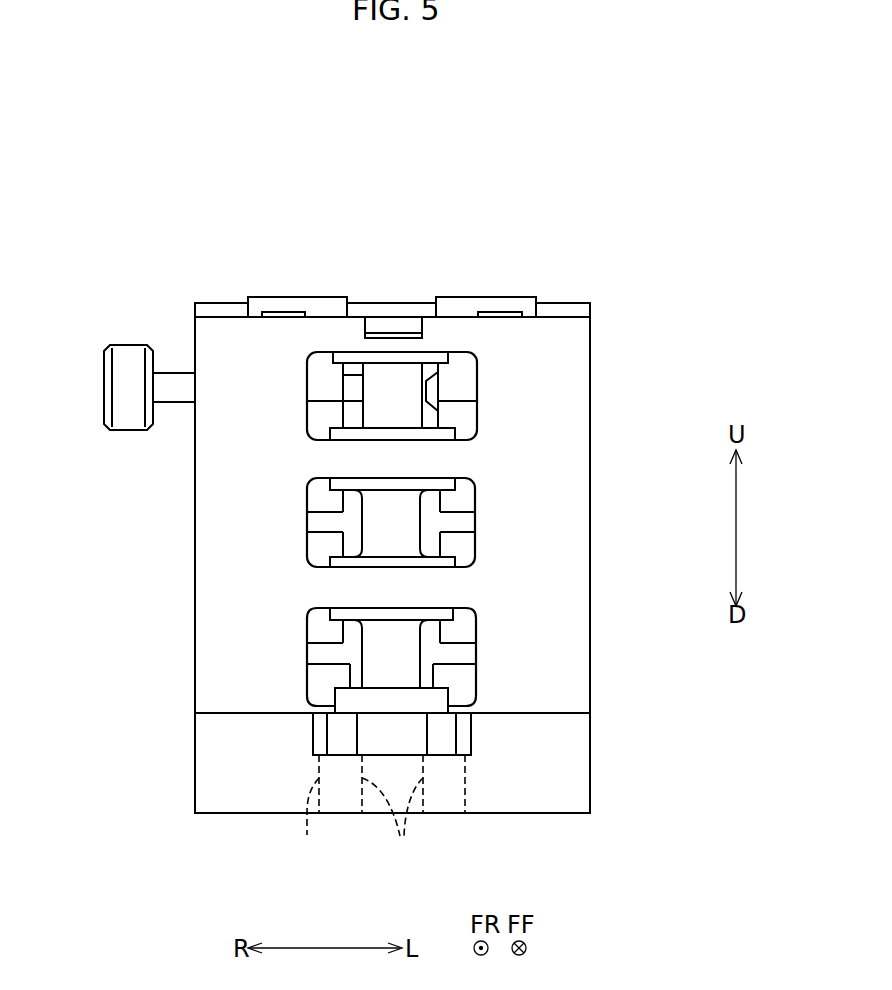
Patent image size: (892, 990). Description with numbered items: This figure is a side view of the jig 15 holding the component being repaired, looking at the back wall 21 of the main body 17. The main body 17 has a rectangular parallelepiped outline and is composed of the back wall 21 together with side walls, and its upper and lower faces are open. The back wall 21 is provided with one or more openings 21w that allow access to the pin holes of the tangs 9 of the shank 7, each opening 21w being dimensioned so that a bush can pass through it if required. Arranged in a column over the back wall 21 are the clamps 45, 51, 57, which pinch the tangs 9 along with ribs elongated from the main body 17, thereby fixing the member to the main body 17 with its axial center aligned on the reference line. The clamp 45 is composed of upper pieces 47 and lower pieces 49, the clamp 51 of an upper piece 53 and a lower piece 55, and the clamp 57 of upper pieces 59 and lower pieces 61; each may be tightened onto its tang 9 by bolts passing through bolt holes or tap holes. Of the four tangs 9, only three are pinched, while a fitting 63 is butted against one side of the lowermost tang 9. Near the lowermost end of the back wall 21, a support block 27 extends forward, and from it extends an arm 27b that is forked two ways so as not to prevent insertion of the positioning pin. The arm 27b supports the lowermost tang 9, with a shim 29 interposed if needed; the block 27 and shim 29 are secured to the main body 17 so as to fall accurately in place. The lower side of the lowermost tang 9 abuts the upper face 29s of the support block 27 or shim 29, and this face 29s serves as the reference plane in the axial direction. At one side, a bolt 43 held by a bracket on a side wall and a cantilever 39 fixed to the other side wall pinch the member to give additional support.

The jig 15 is at (358, 170).
The back wall 21 is at (566, 332).
The opening 21w is at (460, 375).
The clamp 45 is at (392, 287).
The upper piece 47 is at (274, 305).
The lower piece 49 is at (320, 373).
The shank 7 is at (383, 373).
The cantilever 39 is at (431, 378).
The bolt 43 is at (110, 388).
The clamp 51 is at (396, 454).
The upper piece 53 is at (313, 425).
The lower piece 55 is at (313, 500).
The clamp 57 is at (396, 601).
The upper piece 59 is at (313, 553).
The lower piece 61 is at (313, 627).
The fitting 63 is at (318, 690).
The shim 29 is at (327, 740).
The upper face 29s is at (315, 704).
The support block 27 is at (378, 810).
The arm 27b is at (399, 810).
The tang 9 is at (428, 438).
The main body 17 is at (193, 549).